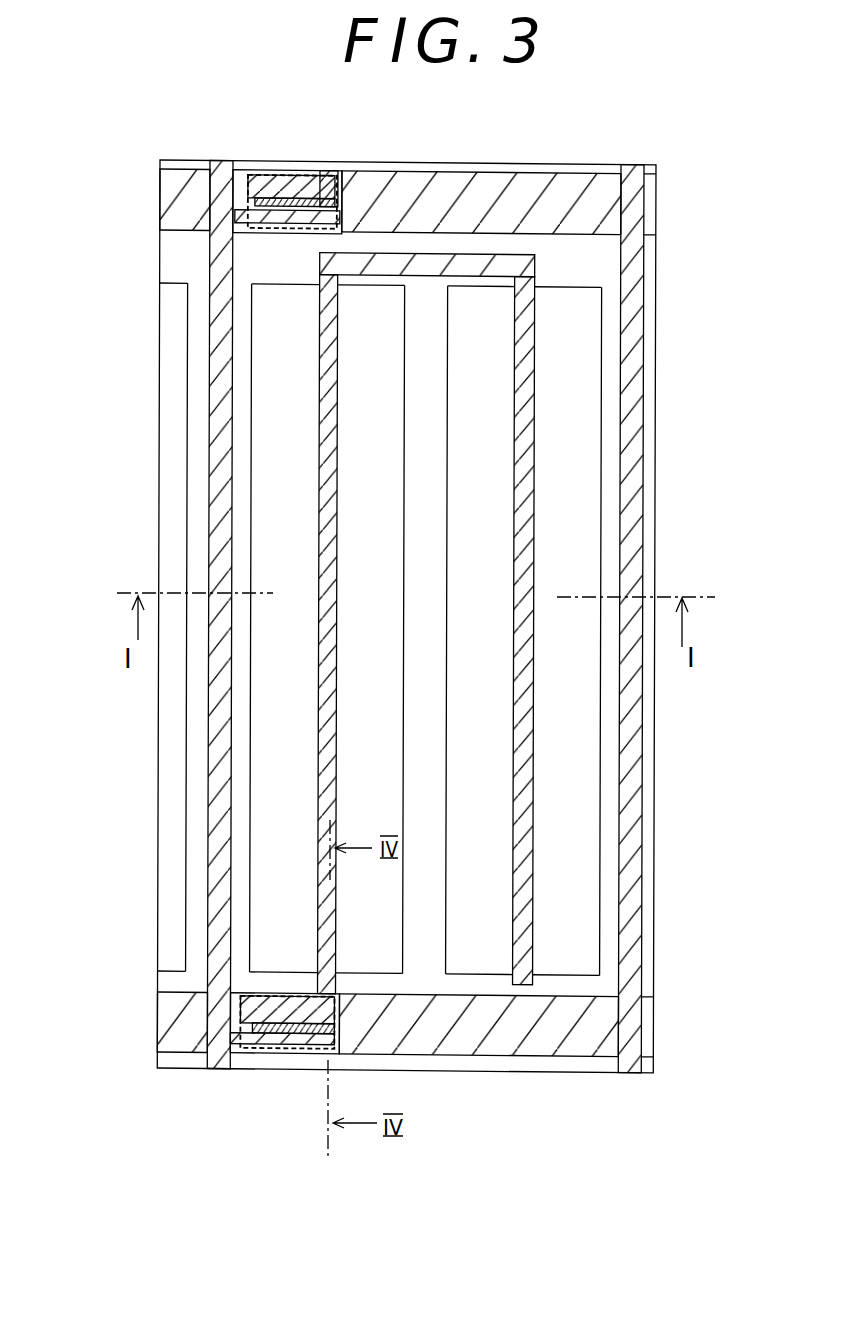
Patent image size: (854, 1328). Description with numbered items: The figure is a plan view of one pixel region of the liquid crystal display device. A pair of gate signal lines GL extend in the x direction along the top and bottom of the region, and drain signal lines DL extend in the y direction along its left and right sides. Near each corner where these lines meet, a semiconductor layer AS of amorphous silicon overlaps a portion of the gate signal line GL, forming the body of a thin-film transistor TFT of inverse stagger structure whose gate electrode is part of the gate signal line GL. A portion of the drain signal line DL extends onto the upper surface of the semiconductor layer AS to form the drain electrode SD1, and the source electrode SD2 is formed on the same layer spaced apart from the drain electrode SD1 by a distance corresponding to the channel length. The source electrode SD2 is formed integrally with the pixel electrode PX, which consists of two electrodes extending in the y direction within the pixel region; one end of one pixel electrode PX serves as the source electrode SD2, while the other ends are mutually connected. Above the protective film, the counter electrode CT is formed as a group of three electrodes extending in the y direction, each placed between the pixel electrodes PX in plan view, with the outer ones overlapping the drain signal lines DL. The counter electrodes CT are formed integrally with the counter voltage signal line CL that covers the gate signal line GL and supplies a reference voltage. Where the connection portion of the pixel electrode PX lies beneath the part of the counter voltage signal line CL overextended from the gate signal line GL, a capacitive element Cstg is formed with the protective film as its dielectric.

The gate signal line GL is at (657, 205).
The drain signal line DL is at (216, 1057).
The counter voltage signal line CL is at (557, 288).
The counter electrode CT is at (413, 383).
The pixel electrode PX is at (528, 752).
The capacitive element Cstg is at (497, 251).
The thin-film transistor TFT is at (278, 659).
The drain electrode SD1 is at (298, 1044).
The source electrode SD2 is at (266, 1000).
The semiconductor layer AS is at (240, 1040).